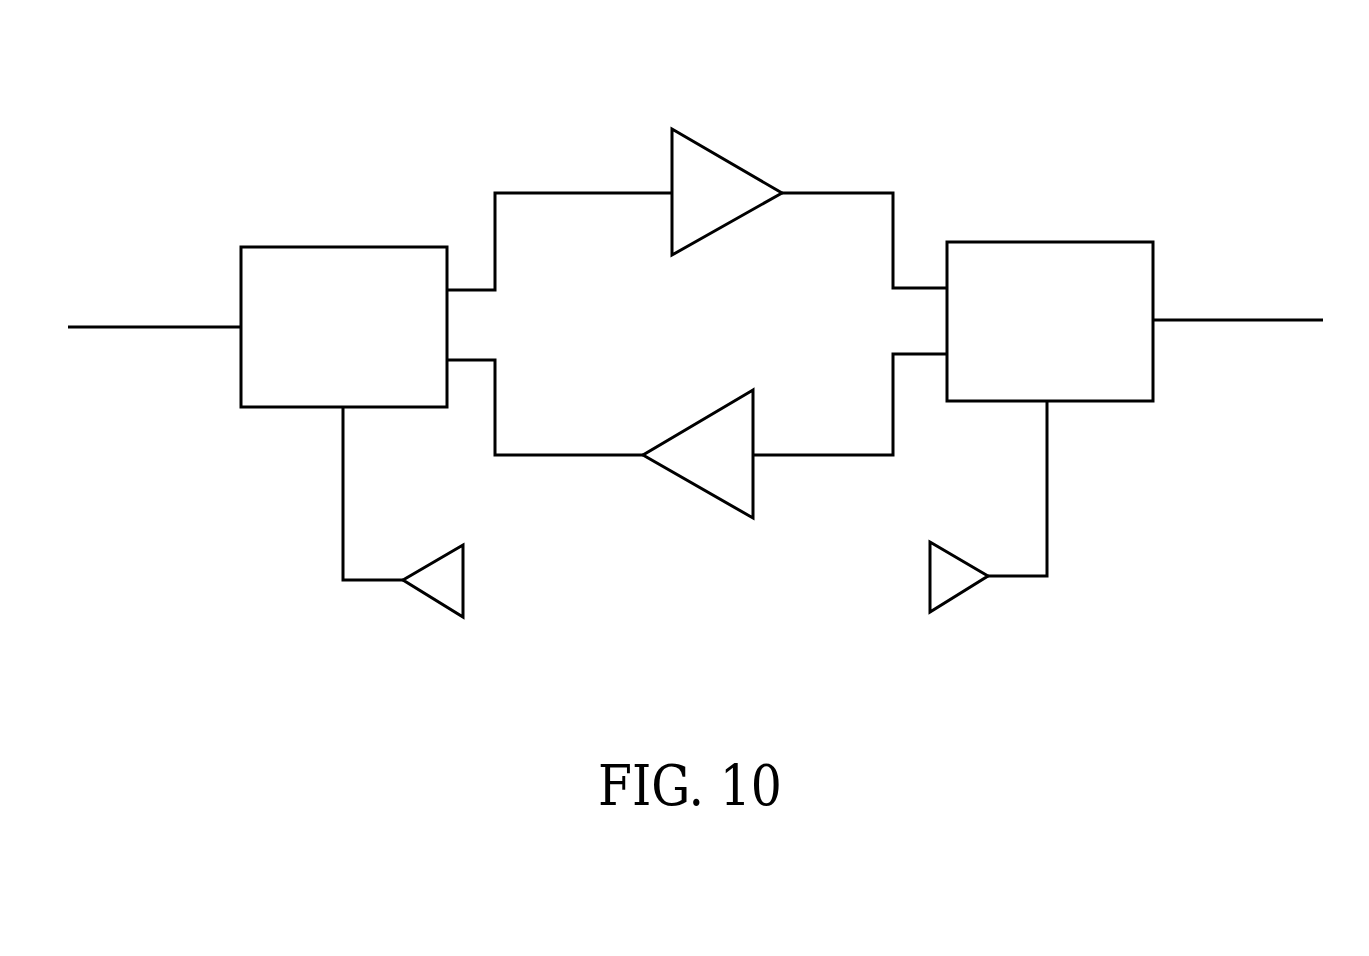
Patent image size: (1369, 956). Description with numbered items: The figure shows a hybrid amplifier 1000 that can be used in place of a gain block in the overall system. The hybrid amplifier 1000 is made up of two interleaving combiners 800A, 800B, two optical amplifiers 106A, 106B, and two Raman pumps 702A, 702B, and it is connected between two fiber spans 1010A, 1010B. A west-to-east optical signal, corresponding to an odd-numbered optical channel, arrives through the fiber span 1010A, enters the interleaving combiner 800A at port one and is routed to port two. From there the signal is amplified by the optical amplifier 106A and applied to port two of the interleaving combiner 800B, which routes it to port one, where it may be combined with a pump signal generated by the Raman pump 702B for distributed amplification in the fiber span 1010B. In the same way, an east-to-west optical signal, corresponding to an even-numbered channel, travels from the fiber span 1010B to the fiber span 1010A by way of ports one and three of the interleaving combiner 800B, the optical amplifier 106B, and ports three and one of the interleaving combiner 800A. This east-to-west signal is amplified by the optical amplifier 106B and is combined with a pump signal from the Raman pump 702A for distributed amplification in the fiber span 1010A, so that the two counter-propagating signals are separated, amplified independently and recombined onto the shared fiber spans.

The hybrid amplifier 1000 is at (146, 588).
The fiber span 1010A is at (153, 327).
The fiber span 1010B is at (1235, 320).
The interleaving combiner (ILC) 800A is at (300, 247).
The interleaving combiner (ILC) 800B is at (1033, 242).
The optical amplifier (OA) 106A is at (727, 158).
The optical amplifier (OA) 106B is at (702, 418).
The Raman pump 702A is at (425, 597).
The Raman pump 702B is at (962, 592).